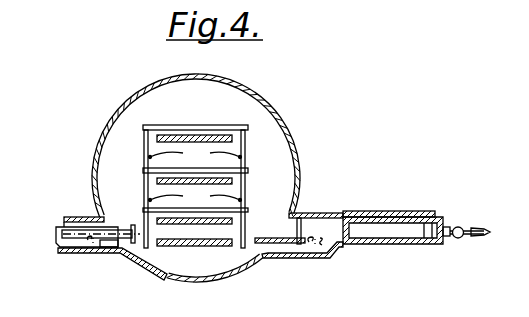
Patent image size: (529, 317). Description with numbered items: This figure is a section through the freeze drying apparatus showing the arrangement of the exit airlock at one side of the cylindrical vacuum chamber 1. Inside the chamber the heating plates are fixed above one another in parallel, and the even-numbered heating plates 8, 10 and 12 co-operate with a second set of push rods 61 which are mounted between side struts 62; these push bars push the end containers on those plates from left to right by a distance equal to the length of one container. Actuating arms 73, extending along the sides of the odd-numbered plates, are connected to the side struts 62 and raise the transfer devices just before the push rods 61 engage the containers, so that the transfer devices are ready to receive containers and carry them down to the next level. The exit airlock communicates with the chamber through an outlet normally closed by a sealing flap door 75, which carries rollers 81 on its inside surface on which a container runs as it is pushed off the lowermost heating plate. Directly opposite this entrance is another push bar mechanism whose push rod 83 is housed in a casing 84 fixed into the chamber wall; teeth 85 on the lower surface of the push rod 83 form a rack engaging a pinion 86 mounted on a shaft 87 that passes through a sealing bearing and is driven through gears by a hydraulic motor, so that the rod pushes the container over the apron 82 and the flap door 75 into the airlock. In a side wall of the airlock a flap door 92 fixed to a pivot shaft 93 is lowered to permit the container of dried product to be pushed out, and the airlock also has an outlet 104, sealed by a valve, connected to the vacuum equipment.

The vacuum chamber 1 is at (293, 135).
The heating plate 8 is at (192, 135).
The heating plate 10 is at (160, 184).
The heating plate 12 is at (237, 214).
The push rods 61 is at (160, 128).
The side struts 62 is at (247, 143).
The actuating arms 73 is at (195, 176).
The sealing flap door 75 is at (301, 237).
The rollers 81 is at (298, 228).
The apron 82 is at (273, 237).
The push rod 83 is at (65, 235).
The casing 84 is at (66, 222).
The teeth 85 is at (115, 247).
The pinion 86 is at (93, 252).
The shaft 87 is at (91, 242).
The flap door 92 is at (407, 230).
The pivot shaft 93 is at (398, 212).
The outlet 104 is at (450, 225).